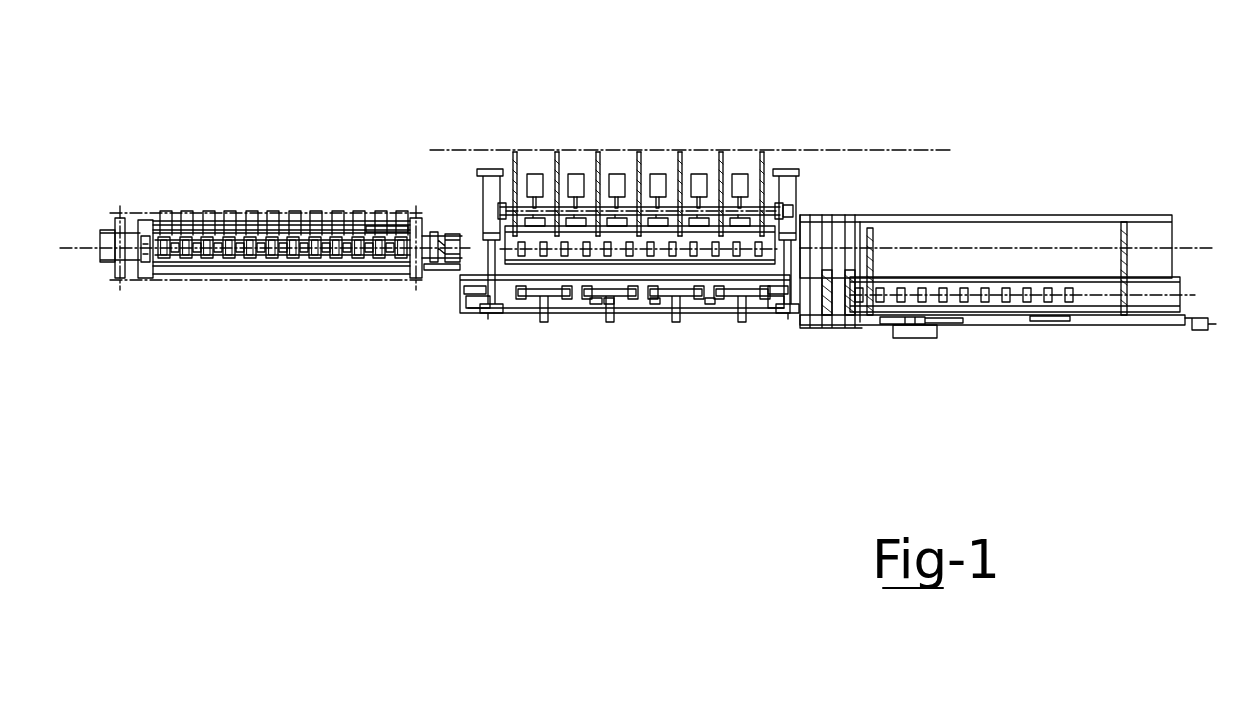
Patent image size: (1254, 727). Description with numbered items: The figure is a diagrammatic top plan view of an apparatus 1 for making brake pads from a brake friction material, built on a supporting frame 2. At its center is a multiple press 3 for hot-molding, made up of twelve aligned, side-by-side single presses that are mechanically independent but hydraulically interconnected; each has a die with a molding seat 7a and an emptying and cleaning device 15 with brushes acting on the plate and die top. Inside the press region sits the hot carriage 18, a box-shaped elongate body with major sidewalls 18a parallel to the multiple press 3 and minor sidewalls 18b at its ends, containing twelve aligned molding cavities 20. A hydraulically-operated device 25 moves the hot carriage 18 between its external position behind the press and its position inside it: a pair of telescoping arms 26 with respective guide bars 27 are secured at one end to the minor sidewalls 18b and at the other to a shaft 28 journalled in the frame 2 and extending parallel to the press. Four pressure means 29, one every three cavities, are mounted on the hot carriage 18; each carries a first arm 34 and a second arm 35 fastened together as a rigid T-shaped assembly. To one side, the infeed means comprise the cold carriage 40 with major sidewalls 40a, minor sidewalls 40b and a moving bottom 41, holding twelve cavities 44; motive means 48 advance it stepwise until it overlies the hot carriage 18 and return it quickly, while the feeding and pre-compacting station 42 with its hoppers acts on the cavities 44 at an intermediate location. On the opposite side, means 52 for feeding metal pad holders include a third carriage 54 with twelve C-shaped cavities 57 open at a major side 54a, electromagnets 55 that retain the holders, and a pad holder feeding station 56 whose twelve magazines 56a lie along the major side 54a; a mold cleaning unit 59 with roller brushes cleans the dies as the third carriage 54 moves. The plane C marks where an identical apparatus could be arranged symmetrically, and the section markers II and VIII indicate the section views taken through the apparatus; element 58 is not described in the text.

The apparatus 1 is at (398, 478).
The supporting frame 2 is at (962, 214).
The multiple press 3 is at (580, 140).
The molding seat 7a is at (518, 258).
The emptying and cleaning device 15 is at (660, 175).
The hot carriage 18 is at (585, 385).
The major sidewalls 18a is at (688, 312).
The minor sidewalls 18b is at (512, 300).
The molding cavities 20 is at (655, 302).
The hydraulically-operated device 25 is at (490, 170).
The telescoping arms 26 is at (800, 200).
The guide bars 27 is at (773, 160).
The shaft 28 is at (505, 265).
The pressure means 29 is at (668, 326).
The first arm 34 is at (610, 303).
The second arm 35 is at (594, 302).
The cold carriage 40 is at (922, 270).
The major sidewalls 40a is at (1020, 281).
The minor sidewalls 40b is at (1190, 292).
The moving bottom 41 is at (1105, 298).
The feeding and pre-compacting station 42 is at (836, 328).
The cavities 44 is at (1028, 290).
The motive means 48 is at (930, 336).
The means of feeding metal holders 52 is at (228, 302).
The third carriage 54 is at (207, 276).
The major side 54a is at (370, 224).
The electromagnets 55 is at (308, 258).
The pad holder feeding station 56 is at (222, 198).
The magazines 56a is at (168, 212).
The C-shaped cavities 57 is at (268, 258).
The stop 58 is at (445, 272).
The mold cleaning unit 59 is at (434, 230).
The plane of symmetry C is at (950, 148).
The section line II is at (627, 436).
The section line VIII is at (700, 338).